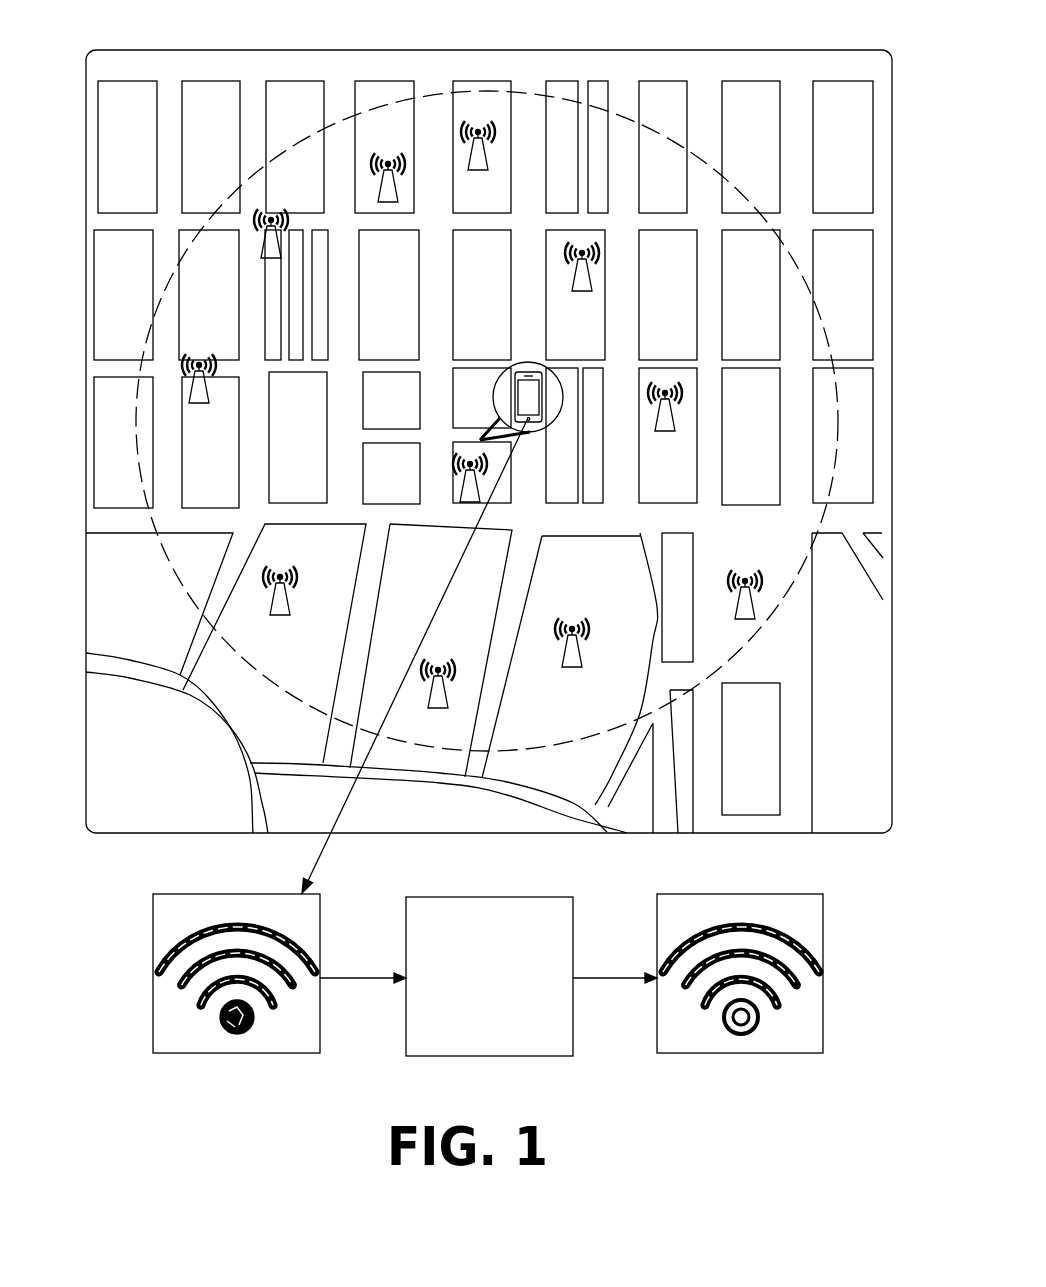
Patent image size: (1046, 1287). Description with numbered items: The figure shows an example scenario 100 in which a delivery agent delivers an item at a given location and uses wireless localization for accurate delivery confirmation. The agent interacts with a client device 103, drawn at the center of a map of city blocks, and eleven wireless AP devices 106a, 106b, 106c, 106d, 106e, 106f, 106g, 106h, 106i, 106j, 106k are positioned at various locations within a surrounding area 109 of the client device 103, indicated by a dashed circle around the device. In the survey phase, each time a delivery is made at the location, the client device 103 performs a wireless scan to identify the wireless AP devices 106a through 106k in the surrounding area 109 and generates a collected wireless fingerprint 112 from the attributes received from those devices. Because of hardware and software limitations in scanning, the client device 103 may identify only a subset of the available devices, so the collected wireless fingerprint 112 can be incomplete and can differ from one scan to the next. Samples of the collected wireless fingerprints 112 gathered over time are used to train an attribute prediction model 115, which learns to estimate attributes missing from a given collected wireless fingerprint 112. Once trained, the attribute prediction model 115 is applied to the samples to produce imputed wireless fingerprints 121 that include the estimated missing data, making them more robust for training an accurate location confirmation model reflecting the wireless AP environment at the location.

The example scenario 100 is at (844, 1101).
The client device 103 is at (530, 362).
The wireless AP device 106a is at (205, 375).
The wireless AP device 106b is at (276, 230).
The wireless AP device 106c is at (393, 174).
The wireless AP device 106d is at (484, 142).
The wireless AP device 106e is at (587, 263).
The wireless AP device 106f is at (670, 403).
The wireless AP device 106g is at (750, 591).
The wireless AP device 106h is at (577, 639).
The wireless AP device 106i is at (443, 680).
The wireless AP device 106j is at (475, 474).
The wireless AP device 106k is at (285, 587).
The surrounding area 109 is at (442, 91).
The collected wireless fingerprint 112 is at (185, 1053).
The attribute prediction model 115 is at (547, 1017).
The imputed wireless fingerprint 121 is at (710, 1053).